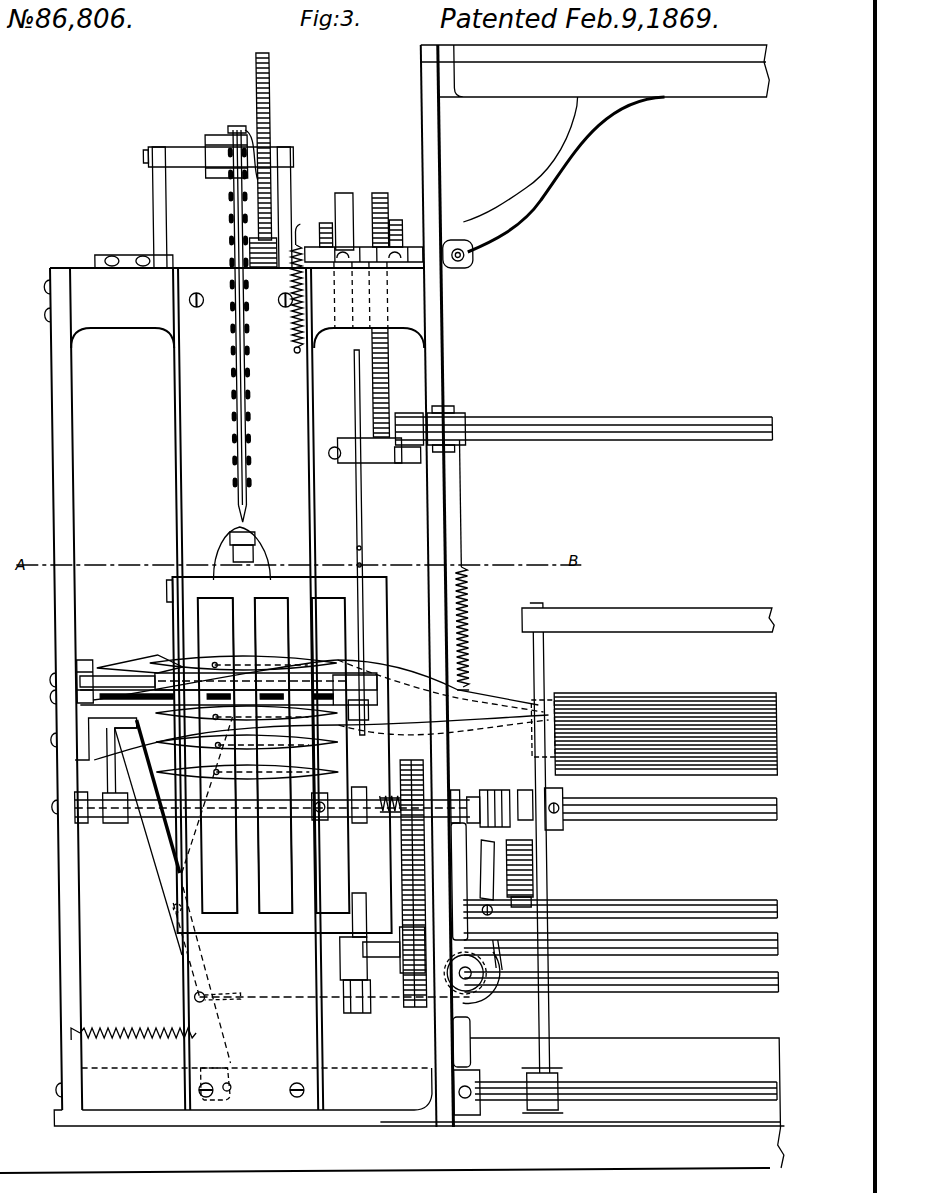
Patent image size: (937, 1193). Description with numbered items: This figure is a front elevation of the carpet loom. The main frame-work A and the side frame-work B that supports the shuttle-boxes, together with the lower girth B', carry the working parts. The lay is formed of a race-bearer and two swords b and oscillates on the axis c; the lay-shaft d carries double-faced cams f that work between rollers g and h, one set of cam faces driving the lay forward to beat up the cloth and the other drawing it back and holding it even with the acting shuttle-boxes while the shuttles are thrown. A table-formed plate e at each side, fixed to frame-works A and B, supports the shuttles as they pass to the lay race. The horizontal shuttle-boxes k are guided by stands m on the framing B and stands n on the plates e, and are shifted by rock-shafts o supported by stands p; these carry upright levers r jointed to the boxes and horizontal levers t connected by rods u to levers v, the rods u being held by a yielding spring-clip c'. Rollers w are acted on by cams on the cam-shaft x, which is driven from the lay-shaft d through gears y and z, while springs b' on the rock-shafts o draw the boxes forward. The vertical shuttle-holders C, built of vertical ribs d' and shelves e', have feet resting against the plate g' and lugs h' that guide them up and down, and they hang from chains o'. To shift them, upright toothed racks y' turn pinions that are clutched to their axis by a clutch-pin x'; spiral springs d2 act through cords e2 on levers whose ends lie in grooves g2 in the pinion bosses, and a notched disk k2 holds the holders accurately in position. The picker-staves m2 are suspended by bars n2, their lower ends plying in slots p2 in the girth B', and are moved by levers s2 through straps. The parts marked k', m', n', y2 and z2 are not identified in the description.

The main frame-work A is at (598, 297).
The frame-work B is at (240, 682).
The girth B' is at (419, 1097).
The vertical shuttle boxes or holders C is at (281, 755).
The swords b is at (539, 872).
The springs b' is at (357, 818).
The axis c is at (615, 1066).
The spring-clip c' is at (584, 429).
The lay-shaft d is at (661, 809).
The vertical ribs d' is at (246, 755).
The spiral springs d2 is at (465, 652).
The table-formed plate e is at (321, 733).
The shelves or ledges e' is at (318, 686).
The cords e2 is at (464, 563).
The double-faced cams f is at (519, 866).
The rollers g is at (443, 788).
The plate g' is at (224, 597).
The groove g2 is at (236, 1011).
The rollers h is at (249, 553).
The lugs h' is at (165, 591).
The horizontal shuttle-boxes k is at (228, 689).
The blades k' is at (218, 716).
The disk k2 is at (302, 277).
The stands m is at (82, 681).
The roller m' is at (579, 709).
The picker-staves m2 is at (148, 837).
The stands n is at (358, 710).
The block n' is at (373, 936).
The bars n2 is at (319, 235).
The rock-shafts o is at (272, 808).
The chains o' is at (254, 287).
The stands p is at (100, 807).
The slots p2 is at (226, 156).
The upright levers r is at (106, 755).
The levers s2 is at (486, 870).
The horizontal levers t is at (327, 952).
The rods u is at (415, 883).
The levers v is at (355, 991).
The rollers w is at (436, 971).
The cam-shaft x is at (589, 959).
The clutch-pin x' is at (620, 909).
The gear y is at (396, 508).
The upright toothed racks y' is at (379, 315).
The block y2 is at (489, 808).
The gear z is at (207, 908).
The bracket z2 is at (373, 341).